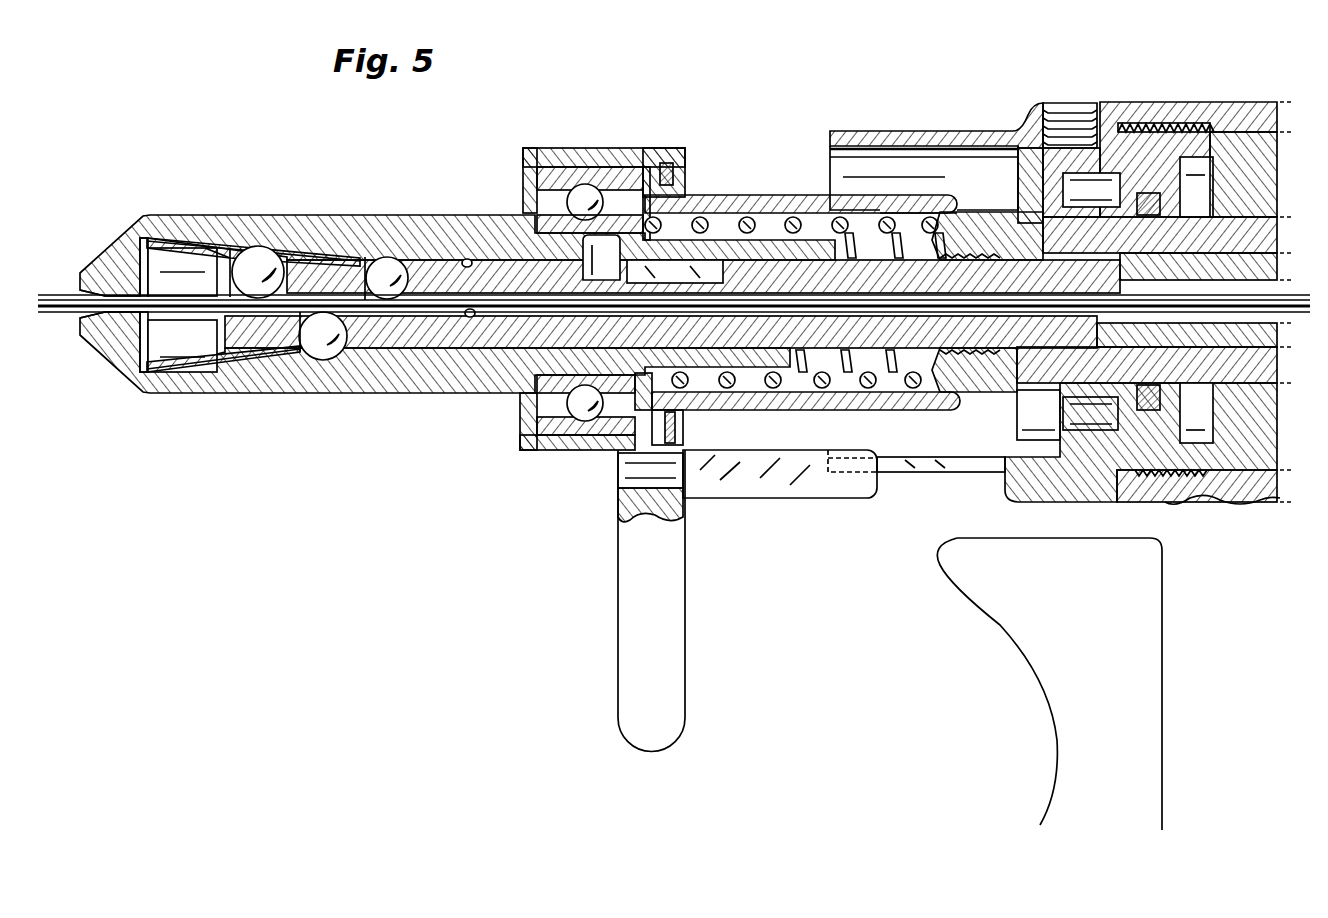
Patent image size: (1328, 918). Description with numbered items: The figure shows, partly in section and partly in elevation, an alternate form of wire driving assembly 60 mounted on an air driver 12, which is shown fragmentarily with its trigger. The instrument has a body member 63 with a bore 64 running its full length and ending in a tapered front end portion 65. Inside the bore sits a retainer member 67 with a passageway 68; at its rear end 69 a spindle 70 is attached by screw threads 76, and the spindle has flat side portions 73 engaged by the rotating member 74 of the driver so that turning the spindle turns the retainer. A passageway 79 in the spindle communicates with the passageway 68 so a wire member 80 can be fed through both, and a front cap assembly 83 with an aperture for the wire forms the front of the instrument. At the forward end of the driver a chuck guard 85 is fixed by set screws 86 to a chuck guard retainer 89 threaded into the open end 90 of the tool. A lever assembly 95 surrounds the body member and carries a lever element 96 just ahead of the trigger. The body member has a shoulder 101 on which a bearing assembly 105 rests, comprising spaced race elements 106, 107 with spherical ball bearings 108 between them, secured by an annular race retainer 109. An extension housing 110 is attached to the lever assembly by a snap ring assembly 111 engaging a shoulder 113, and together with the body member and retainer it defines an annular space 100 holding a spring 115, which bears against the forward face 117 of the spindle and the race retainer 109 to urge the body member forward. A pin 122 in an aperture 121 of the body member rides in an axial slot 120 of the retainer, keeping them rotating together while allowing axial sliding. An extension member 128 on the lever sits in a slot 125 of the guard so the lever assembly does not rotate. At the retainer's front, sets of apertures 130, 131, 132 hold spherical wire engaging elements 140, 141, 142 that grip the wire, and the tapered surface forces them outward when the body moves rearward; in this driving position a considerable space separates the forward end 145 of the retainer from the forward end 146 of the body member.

The air driver 12 is at (1254, 562).
The wire driving assembly 60 is at (447, 213).
The body member 63 is at (330, 222).
The bore 64 is at (473, 263).
The tapered front end portion 65 is at (213, 247).
The retainer member 67 is at (397, 333).
The passageway 68 is at (473, 317).
The rear end 69 is at (1070, 270).
The spindle 70 is at (1243, 257).
The flat side portions 73 is at (1148, 350).
The rotating member 74 is at (1210, 233).
The screw threads 76 is at (998, 372).
The passageway 79 is at (1263, 288).
The wire member 80 is at (67, 312).
The front cap assembly 83 is at (113, 363).
The chuck guard 85 is at (950, 131).
The set screws 86 is at (1070, 110).
The chuck guard retainer 89 is at (1145, 143).
The open end 90 is at (1135, 490).
The lever assembly 95 is at (645, 150).
The lever element 96 is at (675, 683).
The annular space 100 is at (773, 222).
The shoulder 101 is at (708, 268).
The bearing assembly 105 is at (580, 232).
The race element 106 is at (553, 387).
The race element 107 is at (580, 413).
The spherical ball bearings 108 is at (577, 410).
The annular race retainer 109 is at (690, 215).
The extension housing 110 is at (917, 405).
The snap ring assembly 111 is at (672, 426).
The shoulder 113 is at (652, 427).
The spring 115 is at (870, 212).
The forward face 117 is at (965, 392).
The slot 120 is at (745, 203).
The aperture 121 is at (565, 230).
The pin 122 is at (615, 240).
The slot 125 is at (920, 463).
The extension member 128 is at (770, 492).
The apertures 130 is at (300, 224).
The apertures 131 is at (313, 357).
The apertures 132 is at (397, 260).
The wire engaging elements 140 is at (262, 246).
The wire engaging elements 141 is at (308, 352).
The wire engaging elements 142 is at (377, 257).
The forward end 145 is at (240, 347).
The forward end 146 is at (157, 380).